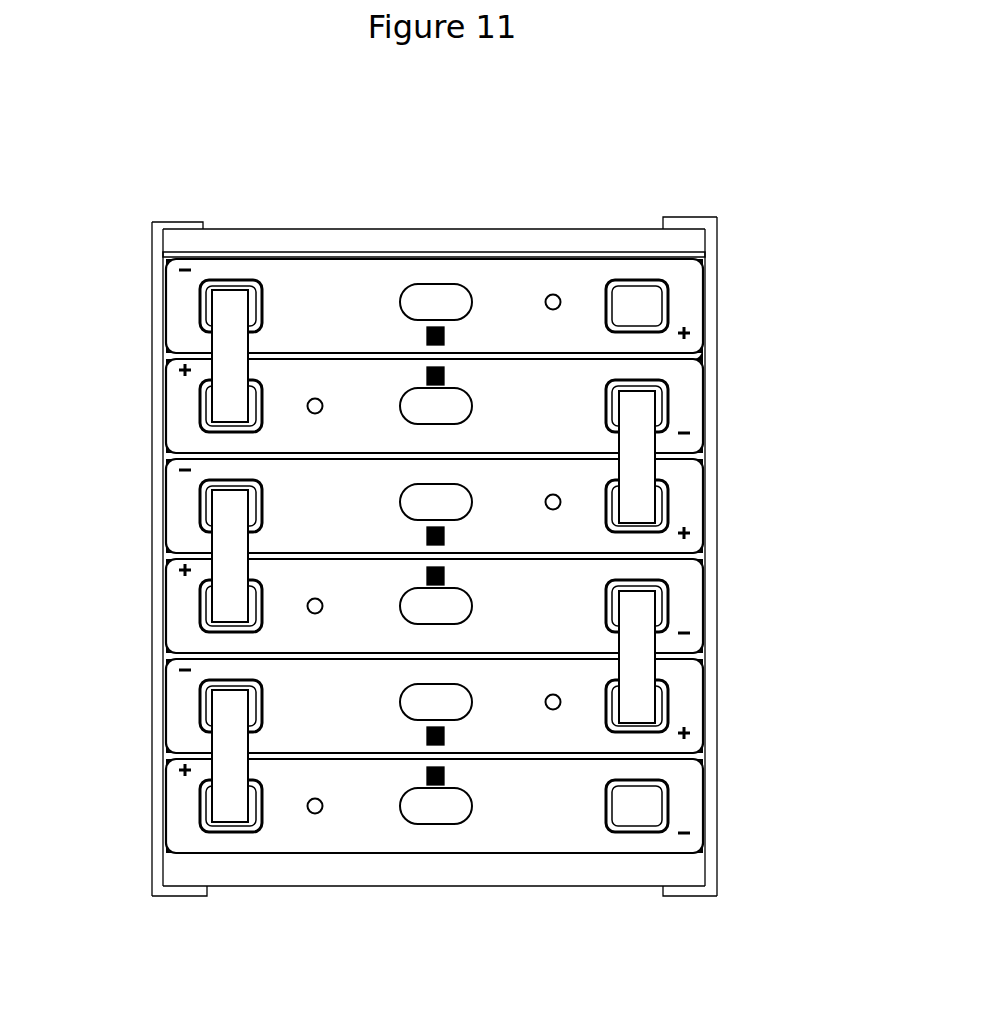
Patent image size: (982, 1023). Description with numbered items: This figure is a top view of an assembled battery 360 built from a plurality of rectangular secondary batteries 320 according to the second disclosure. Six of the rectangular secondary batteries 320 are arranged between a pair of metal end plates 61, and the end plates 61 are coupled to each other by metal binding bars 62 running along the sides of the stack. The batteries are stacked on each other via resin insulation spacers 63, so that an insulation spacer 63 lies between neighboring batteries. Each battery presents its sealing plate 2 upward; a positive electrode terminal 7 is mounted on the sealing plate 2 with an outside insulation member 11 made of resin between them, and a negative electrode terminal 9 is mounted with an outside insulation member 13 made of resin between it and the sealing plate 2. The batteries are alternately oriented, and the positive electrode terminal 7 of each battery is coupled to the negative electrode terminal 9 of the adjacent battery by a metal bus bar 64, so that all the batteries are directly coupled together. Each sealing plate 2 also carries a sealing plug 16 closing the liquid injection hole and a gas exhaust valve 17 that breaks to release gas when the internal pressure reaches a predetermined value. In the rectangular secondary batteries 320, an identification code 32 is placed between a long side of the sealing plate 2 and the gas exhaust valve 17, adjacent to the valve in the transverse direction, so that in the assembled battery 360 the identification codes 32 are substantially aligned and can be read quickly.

The assembled battery 360 is at (162, 112).
The end plate 61 is at (258, 246).
The binding bar 62 is at (712, 406).
The insulation spacer 63 is at (694, 353).
The sealing plate 2 is at (303, 295).
The rectangular secondary battery 320 is at (677, 274).
The outside insulation member 13 is at (228, 288).
The negative electrode terminal 9 is at (220, 295).
The bus bar 64 is at (228, 346).
The positive electrode terminal 7 is at (645, 303).
The outside insulation member 11 is at (634, 284).
The identification code 32 is at (436, 327).
The gas exhaust valve 17 is at (445, 300).
The sealing plug 16 is at (555, 296).